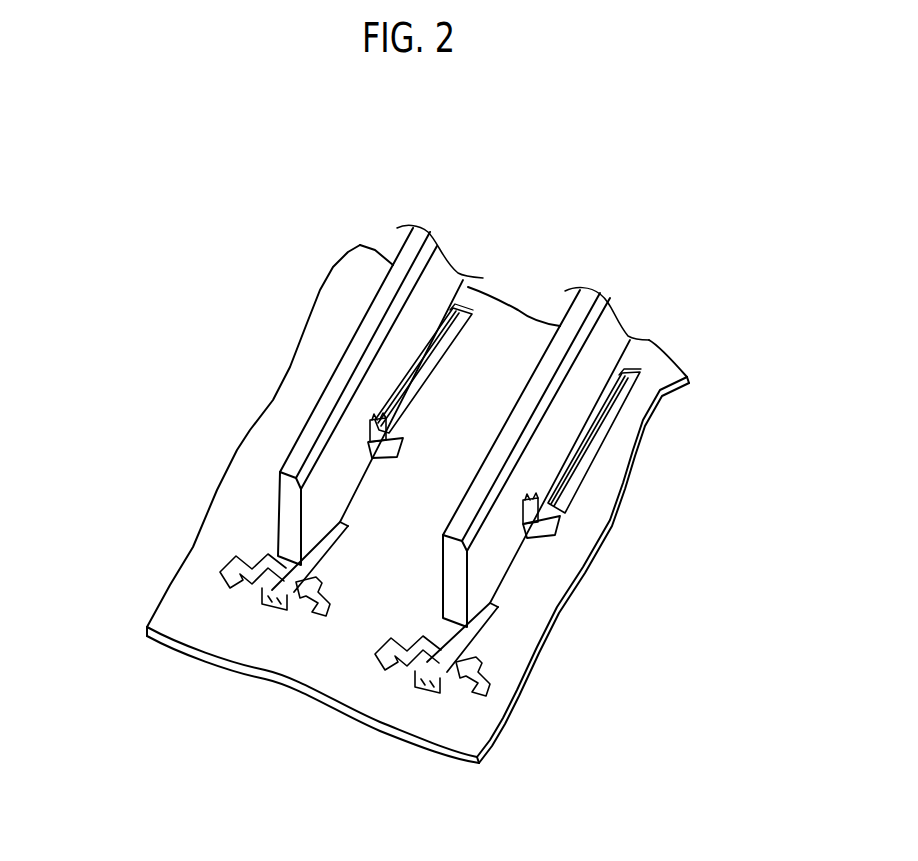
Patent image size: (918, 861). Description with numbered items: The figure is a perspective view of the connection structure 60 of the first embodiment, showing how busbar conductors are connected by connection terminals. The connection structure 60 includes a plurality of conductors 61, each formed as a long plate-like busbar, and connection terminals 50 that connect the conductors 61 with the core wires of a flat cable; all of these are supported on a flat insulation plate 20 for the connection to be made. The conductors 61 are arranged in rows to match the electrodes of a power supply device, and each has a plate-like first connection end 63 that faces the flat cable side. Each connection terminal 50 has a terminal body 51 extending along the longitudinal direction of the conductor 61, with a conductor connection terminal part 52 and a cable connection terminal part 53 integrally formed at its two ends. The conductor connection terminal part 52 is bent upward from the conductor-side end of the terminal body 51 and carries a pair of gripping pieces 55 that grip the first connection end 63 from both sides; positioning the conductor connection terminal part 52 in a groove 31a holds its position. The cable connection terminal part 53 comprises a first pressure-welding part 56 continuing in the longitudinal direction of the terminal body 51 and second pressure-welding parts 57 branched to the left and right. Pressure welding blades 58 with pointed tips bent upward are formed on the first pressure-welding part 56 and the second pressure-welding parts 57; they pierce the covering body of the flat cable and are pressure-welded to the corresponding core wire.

The flat insulation plate 20 is at (239, 455).
The groove 31a is at (393, 423).
The connection terminal 50 is at (390, 551).
The terminal body 51 is at (318, 552).
The conductor connection terminal part 52 is at (352, 497).
The cable connection terminal part 53 is at (260, 606).
The gripping piece 55 is at (383, 436).
The first pressure-welding part 56 is at (275, 606).
The second pressure-welding part 57 is at (240, 590).
The pressure welding blade 58 is at (228, 568).
The connection structure 60 is at (391, 418).
The conductor 61 is at (382, 307).
The first connection end 63 is at (352, 432).